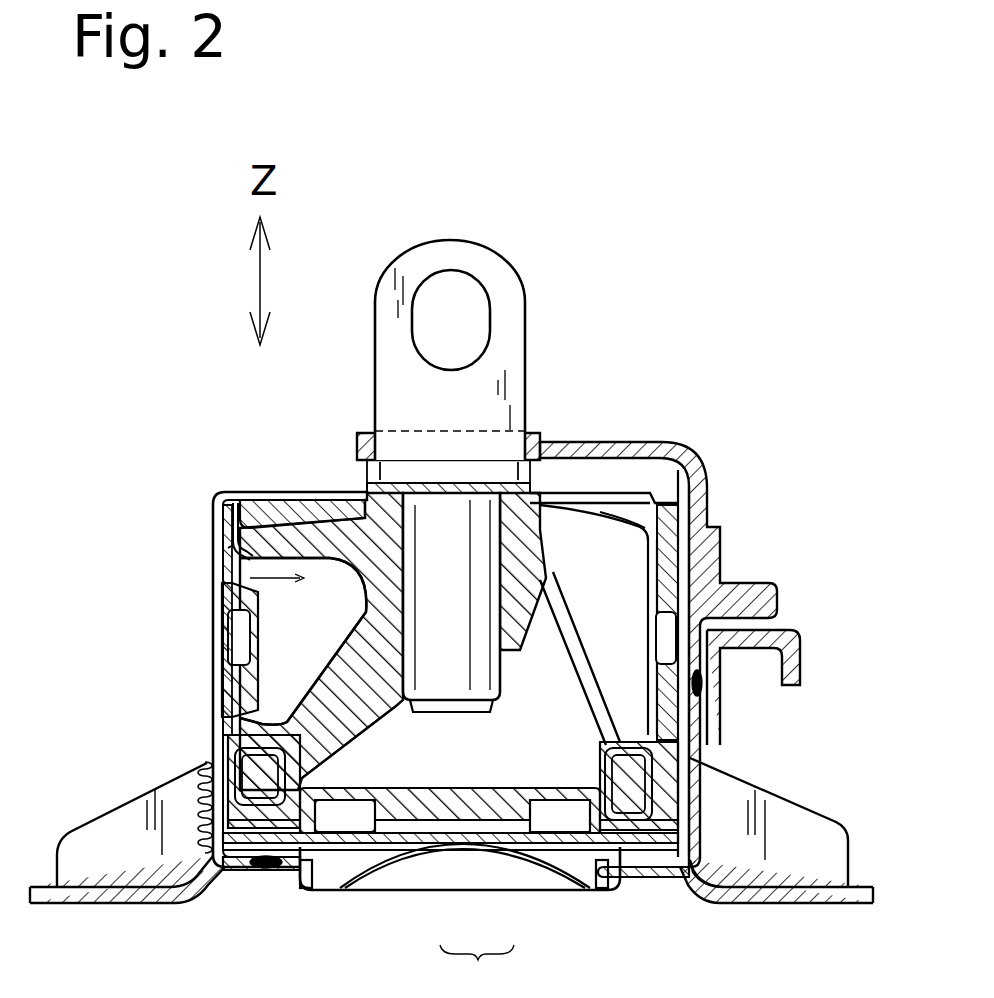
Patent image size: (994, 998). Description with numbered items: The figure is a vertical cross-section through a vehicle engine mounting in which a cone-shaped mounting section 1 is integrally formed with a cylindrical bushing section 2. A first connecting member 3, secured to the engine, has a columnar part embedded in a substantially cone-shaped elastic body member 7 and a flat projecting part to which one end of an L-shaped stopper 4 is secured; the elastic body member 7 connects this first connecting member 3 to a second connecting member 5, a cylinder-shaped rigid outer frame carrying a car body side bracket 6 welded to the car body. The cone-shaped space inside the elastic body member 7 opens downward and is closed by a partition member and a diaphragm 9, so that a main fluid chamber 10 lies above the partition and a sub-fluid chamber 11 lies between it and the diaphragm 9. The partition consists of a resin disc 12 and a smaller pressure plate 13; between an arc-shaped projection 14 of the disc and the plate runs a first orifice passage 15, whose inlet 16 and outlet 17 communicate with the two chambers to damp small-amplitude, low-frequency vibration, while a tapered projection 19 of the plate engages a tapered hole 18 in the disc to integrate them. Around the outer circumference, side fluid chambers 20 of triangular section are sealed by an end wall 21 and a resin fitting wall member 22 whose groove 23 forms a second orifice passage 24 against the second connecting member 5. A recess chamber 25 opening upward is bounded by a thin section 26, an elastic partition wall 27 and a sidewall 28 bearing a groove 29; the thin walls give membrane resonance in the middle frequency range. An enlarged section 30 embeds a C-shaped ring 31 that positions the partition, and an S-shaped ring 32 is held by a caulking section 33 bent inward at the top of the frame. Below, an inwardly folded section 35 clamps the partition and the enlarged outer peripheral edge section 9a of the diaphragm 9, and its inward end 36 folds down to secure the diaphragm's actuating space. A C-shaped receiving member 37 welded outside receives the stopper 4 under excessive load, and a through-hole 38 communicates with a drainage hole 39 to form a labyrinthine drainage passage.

The cone-shaped mounting section 1 is at (390, 770).
The cylindrical bushing section 2 is at (230, 560).
The first connecting member 3 is at (517, 298).
The stopper 4 is at (614, 444).
The second connecting member 5 is at (216, 690).
The car body side bracket 6 is at (84, 835).
The elastic body member 7 is at (326, 700).
The diaphragm 9 is at (555, 892).
The outer peripheral edge section 9a is at (681, 892).
The main fluid chamber 10 is at (448, 744).
The sub-fluid chamber 11 is at (332, 895).
The resin disc 12 is at (502, 872).
The pressure plate 13 is at (478, 858).
The arc-shaped projection 14 is at (582, 795).
The first orifice passage 15 is at (352, 890).
The inlet 16 is at (346, 810).
The outlet 17 is at (525, 849).
The tapered hole 18 is at (441, 826).
The tapered projection 19 is at (472, 838).
The side fluid chamber 20 is at (340, 627).
The end wall 21 is at (332, 518).
The fitting wall member 22 is at (224, 600).
The groove 23 is at (236, 632).
The second orifice passage 24 is at (228, 660).
The recess chamber 25 is at (604, 527).
The thin section 26 is at (575, 660).
The elastic partition wall 27 is at (562, 510).
The sidewall 28 is at (662, 590).
The groove 29 is at (585, 522).
The enlarged section 30 is at (201, 786).
The ring 31 is at (240, 748).
The ring 32 is at (222, 505).
The caulking section 33 is at (236, 495).
The inwardly folded section 35 is at (630, 880).
The inward end 36 is at (601, 892).
The receiving member 37 is at (779, 632).
The through-hole 38 is at (703, 705).
The drainage hole 39 is at (640, 712).